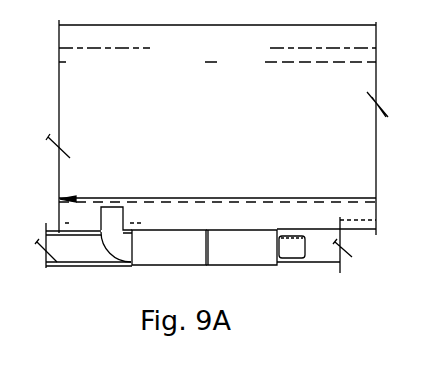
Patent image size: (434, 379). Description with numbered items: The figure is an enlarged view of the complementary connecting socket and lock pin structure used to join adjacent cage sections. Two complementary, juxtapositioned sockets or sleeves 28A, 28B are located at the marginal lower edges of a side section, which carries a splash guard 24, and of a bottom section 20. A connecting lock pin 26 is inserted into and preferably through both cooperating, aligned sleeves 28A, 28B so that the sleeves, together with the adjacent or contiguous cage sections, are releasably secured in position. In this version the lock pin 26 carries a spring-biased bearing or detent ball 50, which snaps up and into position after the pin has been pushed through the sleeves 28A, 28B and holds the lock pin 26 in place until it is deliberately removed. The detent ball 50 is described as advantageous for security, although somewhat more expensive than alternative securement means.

The bottom section 20 is at (347, 262).
The splash guard 24 is at (250, 135).
The connecting lock pin 26 is at (107, 218).
The socket or sleeve 28A is at (140, 270).
The socket or sleeve 28B is at (261, 260).
The spring-biased bearing or detent ball 50 is at (290, 237).